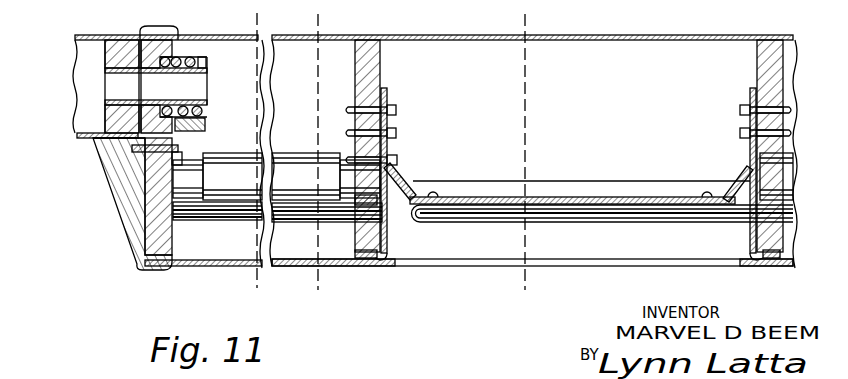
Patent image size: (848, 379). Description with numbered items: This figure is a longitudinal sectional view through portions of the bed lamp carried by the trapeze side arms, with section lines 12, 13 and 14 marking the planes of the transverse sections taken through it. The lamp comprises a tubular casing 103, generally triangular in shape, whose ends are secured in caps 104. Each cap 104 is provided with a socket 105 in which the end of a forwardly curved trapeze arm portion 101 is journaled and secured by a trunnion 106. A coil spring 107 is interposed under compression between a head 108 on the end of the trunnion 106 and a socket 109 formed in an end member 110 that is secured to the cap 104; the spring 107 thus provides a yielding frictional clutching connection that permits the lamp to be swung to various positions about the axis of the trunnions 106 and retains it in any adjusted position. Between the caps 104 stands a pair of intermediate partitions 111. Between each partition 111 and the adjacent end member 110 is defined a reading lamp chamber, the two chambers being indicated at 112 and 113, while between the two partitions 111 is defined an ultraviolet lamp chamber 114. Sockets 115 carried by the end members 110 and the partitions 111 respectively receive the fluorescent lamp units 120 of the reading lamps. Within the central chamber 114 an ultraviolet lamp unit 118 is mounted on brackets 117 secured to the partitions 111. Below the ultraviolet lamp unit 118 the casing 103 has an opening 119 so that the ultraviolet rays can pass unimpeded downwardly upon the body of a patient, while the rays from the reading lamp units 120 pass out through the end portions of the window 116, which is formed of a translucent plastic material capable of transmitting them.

The section line 12- 12 is at (318, 14).
The section line 13- 13 is at (525, 14).
The section line 14- 14 is at (256, 13).
The arm portion 101 is at (97, 139).
The tubular casing 103 is at (683, 35).
The cap 104 is at (120, 200).
The socket 105 is at (125, 142).
The trunnion 106 is at (207, 70).
The coil spring 107 is at (185, 122).
The head 108 is at (188, 114).
The socket 109 is at (176, 60).
The end member 110 is at (172, 253).
The intermediate partition 111 is at (380, 71).
The reading lamp chamber 112 is at (307, 103).
The reading lamp chamber 113 is at (793, 70).
The ultraviolet lamp chamber 114 is at (567, 105).
The socket 115 is at (193, 219).
The window 116 is at (793, 266).
The bracket 117 is at (395, 170).
The ultraviolet lamp unit 118 is at (555, 222).
The opening 119 is at (459, 267).
The fluorescent lamp unit 120 is at (297, 153).